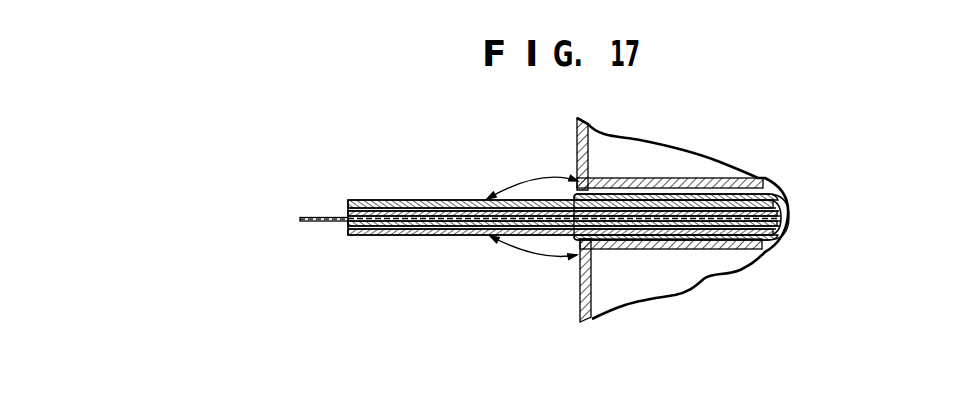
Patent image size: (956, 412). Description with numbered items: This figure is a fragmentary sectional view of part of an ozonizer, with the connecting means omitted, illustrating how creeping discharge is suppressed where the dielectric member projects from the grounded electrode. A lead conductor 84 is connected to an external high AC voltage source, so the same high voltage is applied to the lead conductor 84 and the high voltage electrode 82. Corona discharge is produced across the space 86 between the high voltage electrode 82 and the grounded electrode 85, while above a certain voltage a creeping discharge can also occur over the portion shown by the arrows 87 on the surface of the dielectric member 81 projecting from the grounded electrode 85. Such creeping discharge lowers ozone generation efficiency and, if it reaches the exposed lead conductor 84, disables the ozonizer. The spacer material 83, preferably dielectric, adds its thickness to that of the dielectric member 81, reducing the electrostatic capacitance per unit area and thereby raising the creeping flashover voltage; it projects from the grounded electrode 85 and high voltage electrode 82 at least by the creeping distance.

The dielectric member 81 is at (416, 200).
The high voltage electrode 82 is at (700, 204).
The spacer material 83 is at (650, 226).
The lead conductor 84 is at (326, 222).
The grounded electrode 85 is at (661, 178).
The space 86 is at (742, 188).
The arrows indicating creeping portion 87 is at (527, 180).